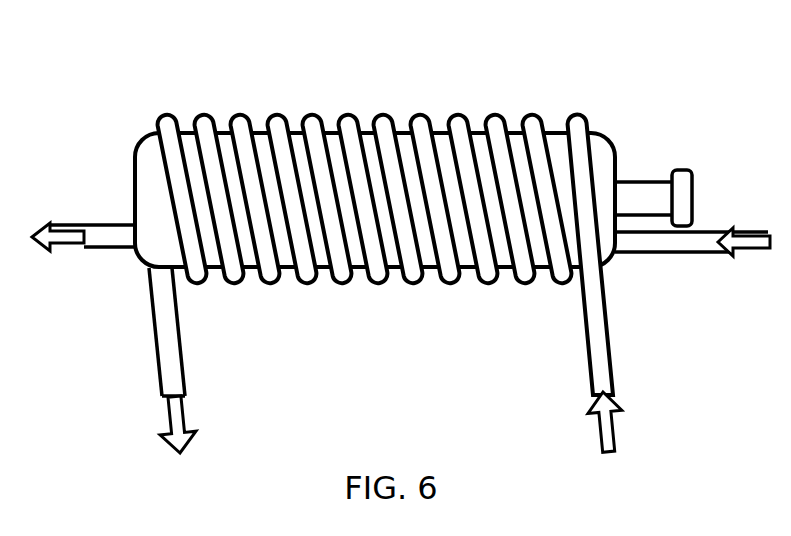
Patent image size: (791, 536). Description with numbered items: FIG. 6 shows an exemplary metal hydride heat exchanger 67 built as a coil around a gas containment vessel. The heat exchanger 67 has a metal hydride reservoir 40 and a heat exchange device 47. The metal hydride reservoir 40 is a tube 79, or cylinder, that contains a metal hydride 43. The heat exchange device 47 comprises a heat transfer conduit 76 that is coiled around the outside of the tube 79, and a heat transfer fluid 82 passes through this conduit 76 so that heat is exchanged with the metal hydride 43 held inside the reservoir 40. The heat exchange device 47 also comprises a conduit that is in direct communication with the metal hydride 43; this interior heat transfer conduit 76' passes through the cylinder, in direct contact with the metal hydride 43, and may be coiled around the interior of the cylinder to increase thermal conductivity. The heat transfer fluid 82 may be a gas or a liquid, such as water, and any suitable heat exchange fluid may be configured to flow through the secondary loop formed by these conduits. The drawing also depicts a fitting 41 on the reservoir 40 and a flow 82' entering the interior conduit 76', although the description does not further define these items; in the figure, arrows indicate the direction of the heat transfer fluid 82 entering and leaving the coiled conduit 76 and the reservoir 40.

The metal hydride reservoir 40 is at (603, 140).
The thermostat / sensor fitting 41 is at (682, 200).
The metal hydride 43 is at (176, 260).
The heat exchange device 47 is at (167, 122).
The metal hydride heat exchanger 67 is at (373, 213).
The heat transfer conduit 76 is at (244, 161).
The interior heat transfer conduit 76' is at (691, 285).
The tube 79 is at (443, 145).
The heat transfer fluid 82 is at (645, 426).
The inlet flow 82' is at (738, 284).